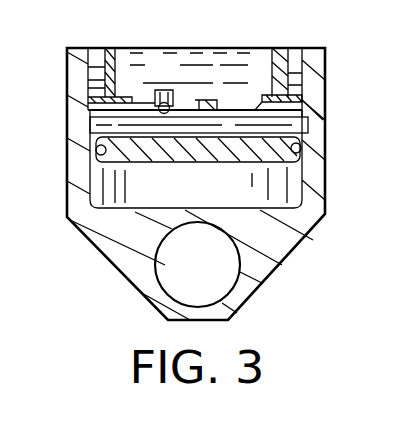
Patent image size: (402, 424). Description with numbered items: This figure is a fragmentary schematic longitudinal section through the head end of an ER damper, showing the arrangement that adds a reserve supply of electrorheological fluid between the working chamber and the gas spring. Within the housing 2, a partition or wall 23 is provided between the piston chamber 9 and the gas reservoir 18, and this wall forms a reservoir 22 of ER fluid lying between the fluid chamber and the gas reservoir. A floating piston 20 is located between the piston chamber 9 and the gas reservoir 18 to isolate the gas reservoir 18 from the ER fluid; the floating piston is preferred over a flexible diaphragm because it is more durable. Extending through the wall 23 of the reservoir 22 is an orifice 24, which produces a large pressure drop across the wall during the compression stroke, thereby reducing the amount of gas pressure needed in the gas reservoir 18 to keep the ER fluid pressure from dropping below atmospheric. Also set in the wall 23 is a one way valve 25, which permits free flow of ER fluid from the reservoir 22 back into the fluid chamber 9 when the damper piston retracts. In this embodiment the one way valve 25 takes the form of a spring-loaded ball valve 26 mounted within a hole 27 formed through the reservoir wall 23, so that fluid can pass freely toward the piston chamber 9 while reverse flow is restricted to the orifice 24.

The housing 2 is at (78, 90).
The piston chamber 9 is at (132, 74).
The gas reservoir 18 is at (82, 197).
The floating piston 20 is at (304, 187).
The reservoir of ER fluid 22 is at (312, 127).
The partition or wall 23 is at (250, 98).
The orifice 24 is at (218, 108).
The one way valve 25 is at (157, 62).
The spring-loaded ball valve 26 is at (156, 110).
The hole 27 is at (173, 110).